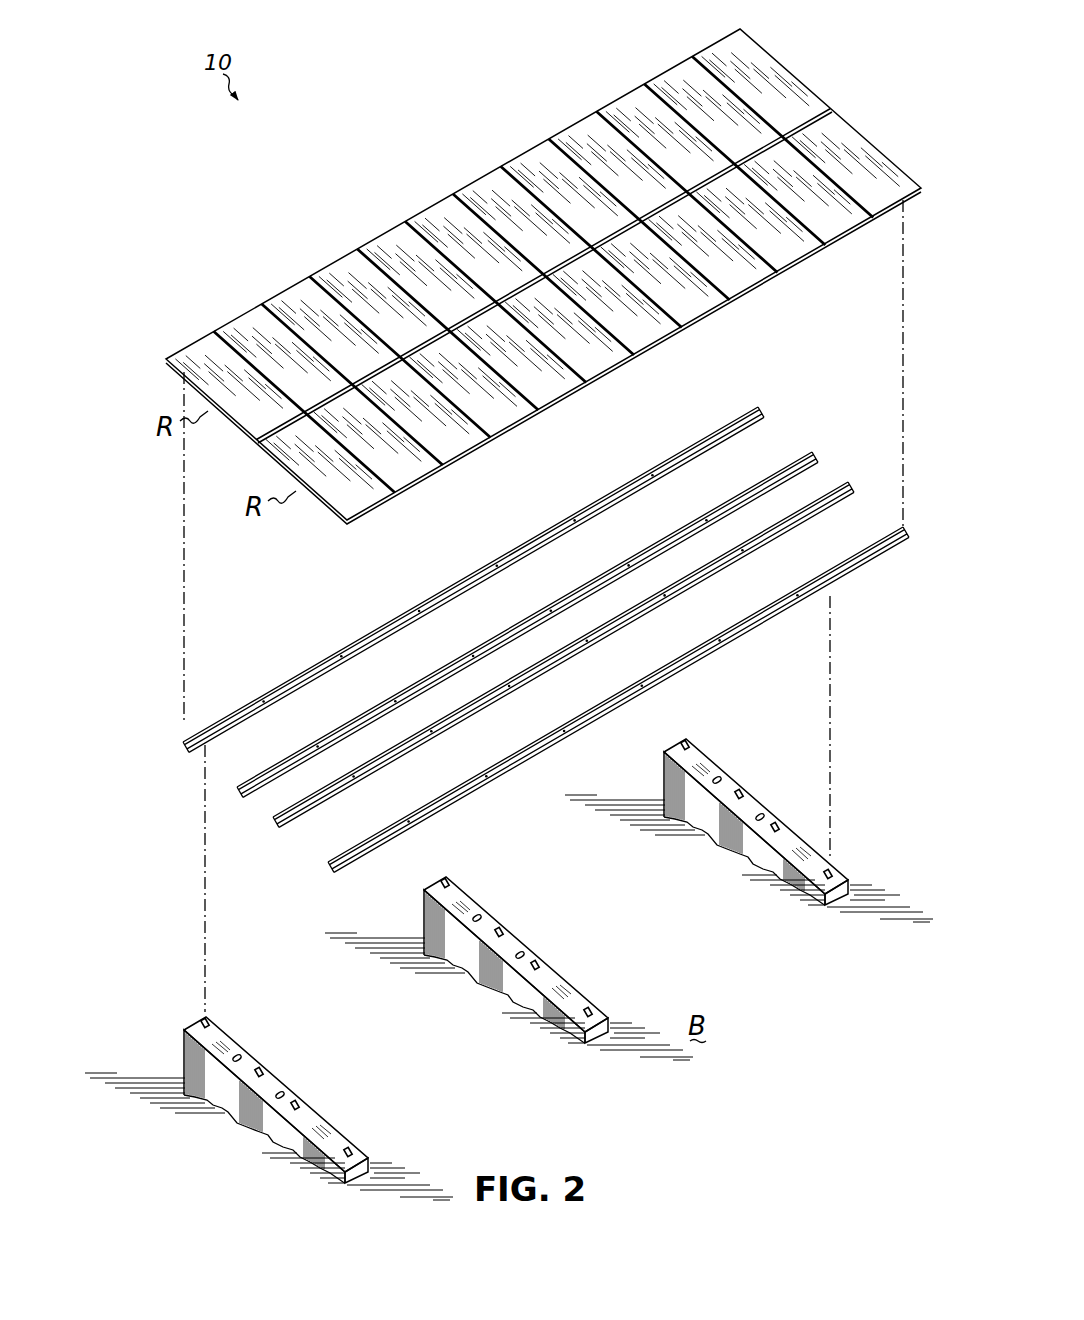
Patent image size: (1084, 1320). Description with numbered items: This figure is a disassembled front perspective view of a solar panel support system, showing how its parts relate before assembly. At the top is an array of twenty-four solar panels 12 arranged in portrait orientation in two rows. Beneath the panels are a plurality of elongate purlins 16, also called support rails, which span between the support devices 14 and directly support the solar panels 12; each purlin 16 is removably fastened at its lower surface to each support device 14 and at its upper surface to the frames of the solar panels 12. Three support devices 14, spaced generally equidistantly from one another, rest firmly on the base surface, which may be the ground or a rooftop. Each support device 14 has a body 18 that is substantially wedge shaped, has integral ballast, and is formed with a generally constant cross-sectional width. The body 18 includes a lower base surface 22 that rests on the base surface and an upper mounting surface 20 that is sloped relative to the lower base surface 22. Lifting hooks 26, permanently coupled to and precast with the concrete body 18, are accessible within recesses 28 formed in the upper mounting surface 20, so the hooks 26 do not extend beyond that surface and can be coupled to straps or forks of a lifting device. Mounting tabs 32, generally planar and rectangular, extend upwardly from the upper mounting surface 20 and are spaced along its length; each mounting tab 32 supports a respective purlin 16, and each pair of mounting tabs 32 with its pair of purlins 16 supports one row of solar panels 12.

The solar panel 12 is at (543, 287).
The support device 14 is at (509, 969).
The purlin 16 is at (546, 639).
The body 18 is at (495, 973).
The upper mounting surface 20 is at (511, 935).
The lower base surface 22 is at (504, 1000).
The lifting hook 26 is at (520, 956).
The recess 28 is at (477, 919).
The mounting tab 32 is at (542, 948).